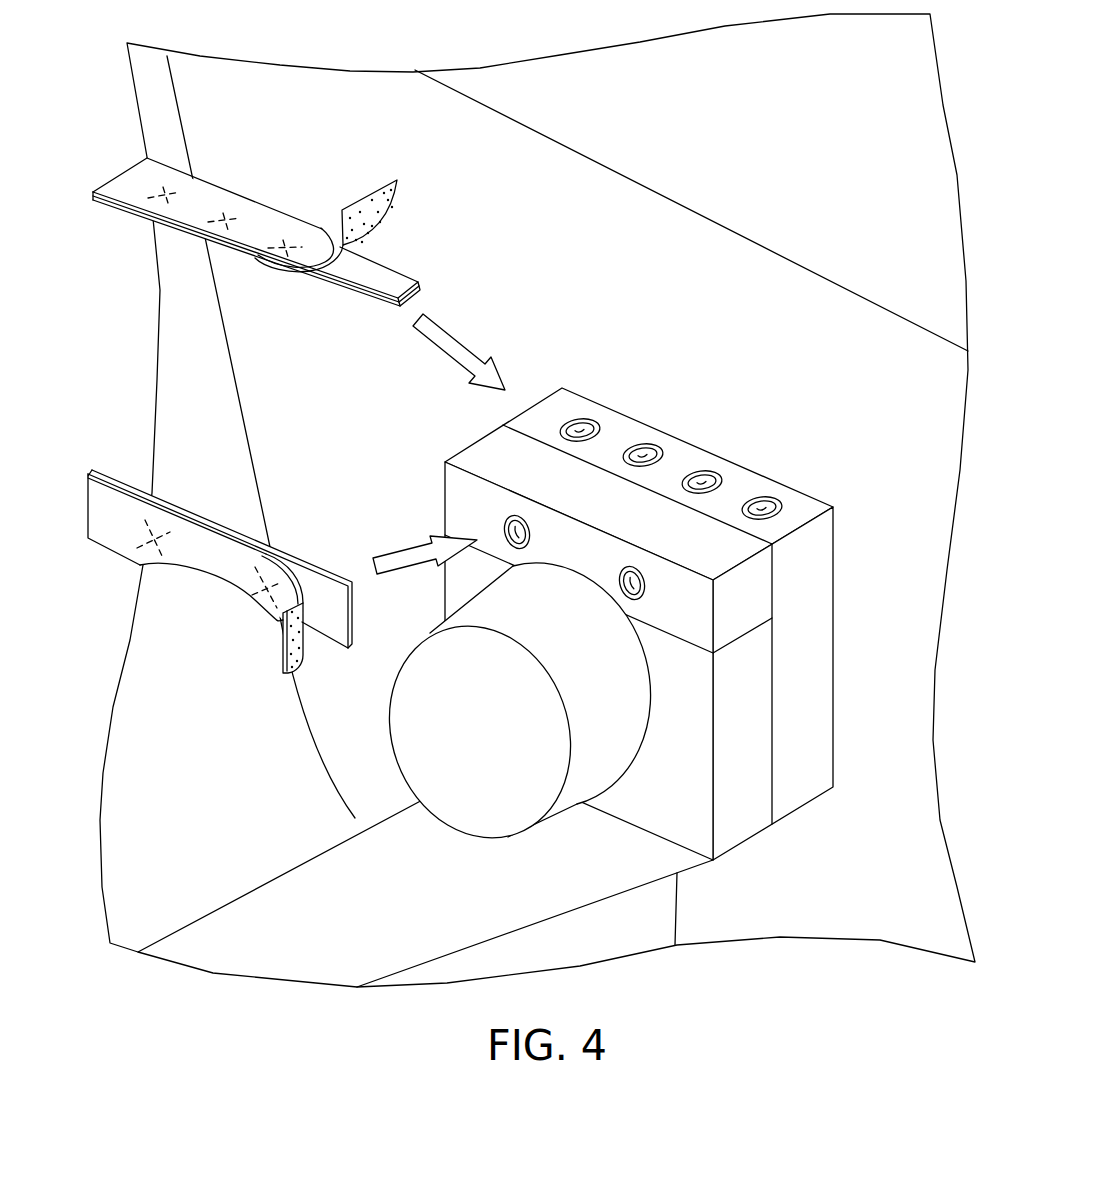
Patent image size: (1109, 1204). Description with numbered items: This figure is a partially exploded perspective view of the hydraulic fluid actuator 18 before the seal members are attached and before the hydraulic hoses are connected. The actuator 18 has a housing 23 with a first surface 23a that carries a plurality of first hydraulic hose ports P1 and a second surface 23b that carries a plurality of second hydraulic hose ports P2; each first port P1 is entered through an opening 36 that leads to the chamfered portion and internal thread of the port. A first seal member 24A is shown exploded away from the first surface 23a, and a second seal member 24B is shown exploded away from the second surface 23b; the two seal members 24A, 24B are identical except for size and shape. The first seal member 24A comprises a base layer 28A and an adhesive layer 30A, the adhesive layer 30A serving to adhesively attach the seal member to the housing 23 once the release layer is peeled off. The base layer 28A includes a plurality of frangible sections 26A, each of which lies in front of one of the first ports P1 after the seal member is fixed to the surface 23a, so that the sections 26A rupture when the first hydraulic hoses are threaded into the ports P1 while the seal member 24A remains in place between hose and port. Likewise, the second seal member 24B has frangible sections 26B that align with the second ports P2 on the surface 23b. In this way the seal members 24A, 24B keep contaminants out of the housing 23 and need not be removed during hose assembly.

The actuator 18 is at (833, 578).
The housing 23 is at (639, 615).
The first surface 23a is at (800, 512).
The second surface 23b is at (680, 600).
The first seal member 24A is at (275, 237).
The second seal member 24B is at (213, 524).
The frangible sections 26A is at (268, 248).
The frangible sections 26B is at (168, 532).
The base layer 28A is at (384, 308).
The adhesive layer 30A is at (380, 207).
The opening 36 is at (640, 458).
The first hydraulic hose ports P1 is at (670, 462).
The second hydraulic hose ports P2 is at (622, 573).